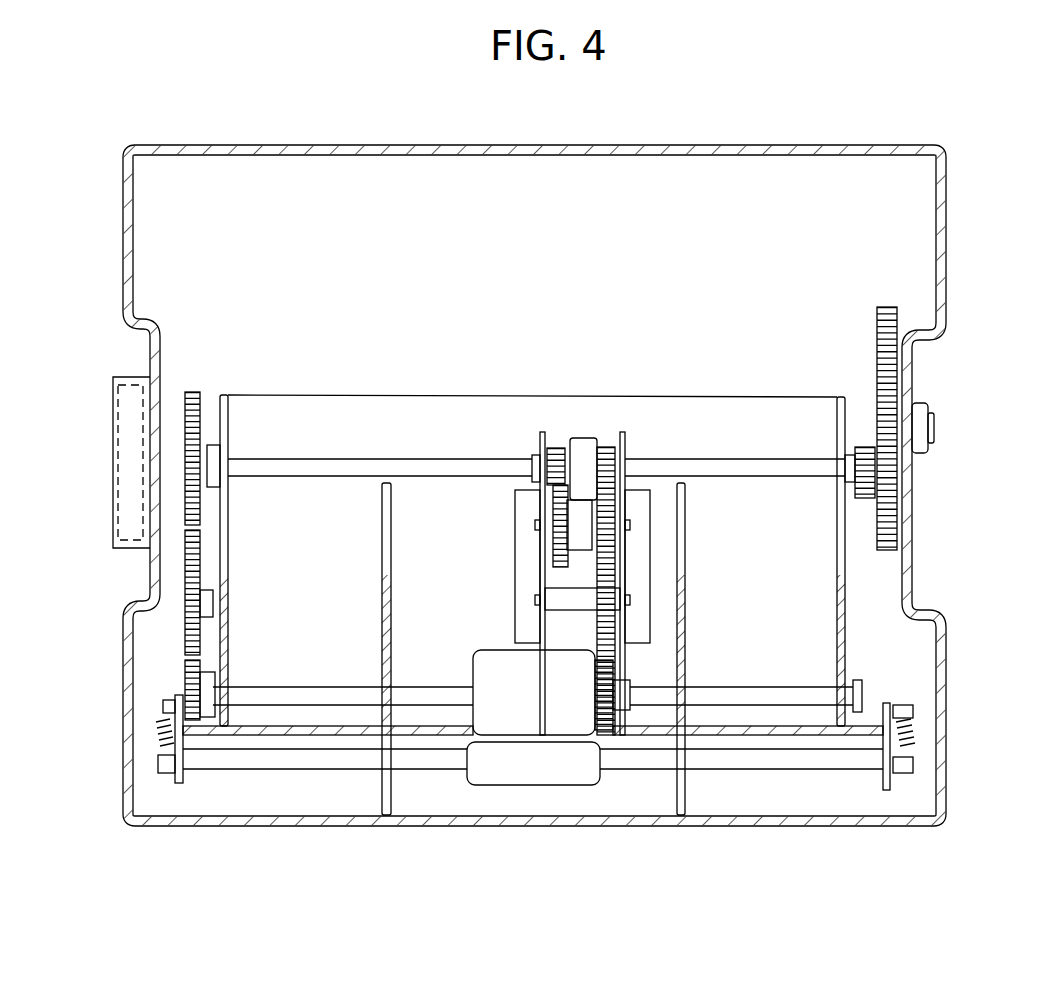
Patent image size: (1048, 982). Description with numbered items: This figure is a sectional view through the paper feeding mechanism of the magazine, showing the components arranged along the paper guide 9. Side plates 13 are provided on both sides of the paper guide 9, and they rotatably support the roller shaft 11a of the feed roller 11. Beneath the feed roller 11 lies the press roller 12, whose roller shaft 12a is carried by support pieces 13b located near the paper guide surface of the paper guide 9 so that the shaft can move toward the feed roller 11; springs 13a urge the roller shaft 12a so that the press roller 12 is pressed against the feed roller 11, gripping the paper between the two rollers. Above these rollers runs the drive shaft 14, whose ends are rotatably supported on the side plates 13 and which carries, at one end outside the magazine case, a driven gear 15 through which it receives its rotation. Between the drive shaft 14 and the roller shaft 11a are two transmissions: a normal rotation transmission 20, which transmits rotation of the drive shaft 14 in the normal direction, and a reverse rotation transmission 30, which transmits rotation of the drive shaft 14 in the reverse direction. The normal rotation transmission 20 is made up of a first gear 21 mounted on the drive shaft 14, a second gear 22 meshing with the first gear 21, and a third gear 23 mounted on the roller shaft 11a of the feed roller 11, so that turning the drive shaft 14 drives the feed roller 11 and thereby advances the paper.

The paper guide 9 is at (432, 735).
The feed roller 11 is at (484, 655).
The roller shaft 11a is at (742, 700).
The press roller 12 is at (522, 772).
The roller shaft 12a is at (298, 770).
The side plates 13 is at (847, 652).
The springs 13a is at (155, 727).
The support pieces 13b is at (178, 785).
The drive shaft 14 is at (458, 470).
The driven gear 15 is at (120, 467).
The normal rotation transmission 20 is at (183, 577).
The first gear 21 is at (185, 410).
The second gear 22 is at (200, 628).
The third gear 23 is at (195, 690).
The reverse rotation transmission 30 is at (590, 436).